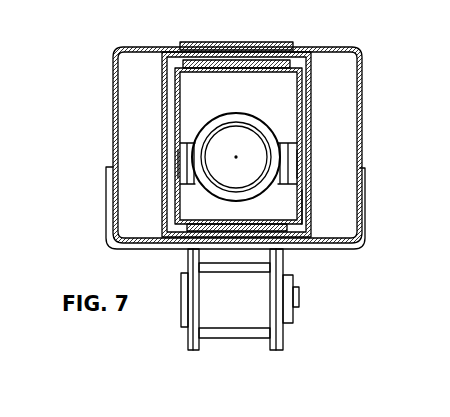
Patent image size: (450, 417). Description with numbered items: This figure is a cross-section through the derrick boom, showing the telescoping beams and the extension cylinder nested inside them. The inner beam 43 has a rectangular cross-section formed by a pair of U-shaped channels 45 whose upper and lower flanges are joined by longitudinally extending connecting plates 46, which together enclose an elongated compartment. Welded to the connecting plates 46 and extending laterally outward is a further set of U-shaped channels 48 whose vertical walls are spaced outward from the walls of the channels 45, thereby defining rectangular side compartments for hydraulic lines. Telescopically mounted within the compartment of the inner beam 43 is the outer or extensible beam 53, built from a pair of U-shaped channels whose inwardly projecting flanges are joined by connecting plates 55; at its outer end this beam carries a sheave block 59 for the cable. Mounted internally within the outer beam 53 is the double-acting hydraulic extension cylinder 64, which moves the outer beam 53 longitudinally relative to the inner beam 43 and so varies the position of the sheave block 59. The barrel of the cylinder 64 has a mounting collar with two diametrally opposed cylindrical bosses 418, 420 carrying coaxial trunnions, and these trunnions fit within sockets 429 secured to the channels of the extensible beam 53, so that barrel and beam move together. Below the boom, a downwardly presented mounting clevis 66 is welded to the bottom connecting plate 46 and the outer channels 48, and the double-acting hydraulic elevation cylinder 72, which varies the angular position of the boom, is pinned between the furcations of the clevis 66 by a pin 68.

The inner beam 43 is at (363, 78).
The U-shaped channels 45 is at (163, 128).
The connecting plates 46 is at (250, 43).
The U-shaped channels 48 is at (113, 123).
The outer or extensible beam 53 is at (305, 200).
The connecting plates 55 is at (234, 68).
The sheave block 59 is at (172, 86).
The double-acting hydraulic extension cylinder 64 is at (261, 128).
The mounting clevis 66 is at (277, 265).
The pin 68 is at (300, 300).
The double-acting hydraulic elevation cylinder 72 is at (248, 338).
The cylindrical boss 418 is at (192, 142).
The cylindrical boss 420 is at (285, 153).
The sockets 429 is at (178, 158).